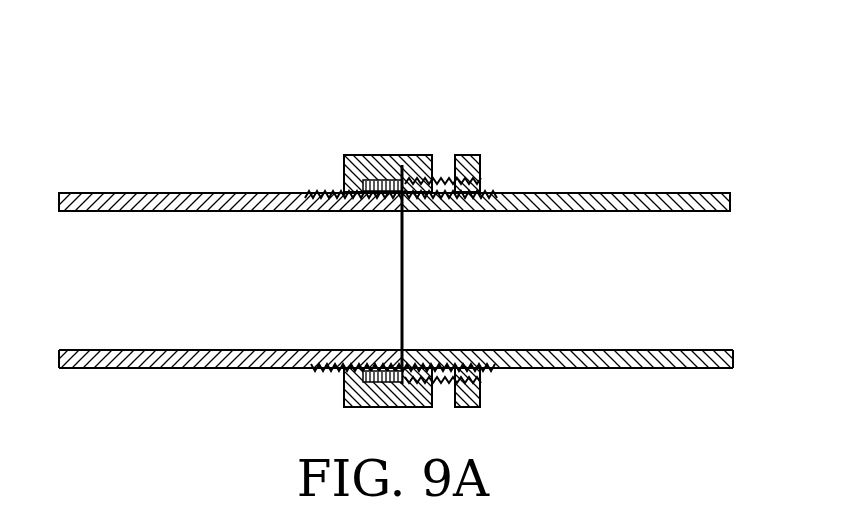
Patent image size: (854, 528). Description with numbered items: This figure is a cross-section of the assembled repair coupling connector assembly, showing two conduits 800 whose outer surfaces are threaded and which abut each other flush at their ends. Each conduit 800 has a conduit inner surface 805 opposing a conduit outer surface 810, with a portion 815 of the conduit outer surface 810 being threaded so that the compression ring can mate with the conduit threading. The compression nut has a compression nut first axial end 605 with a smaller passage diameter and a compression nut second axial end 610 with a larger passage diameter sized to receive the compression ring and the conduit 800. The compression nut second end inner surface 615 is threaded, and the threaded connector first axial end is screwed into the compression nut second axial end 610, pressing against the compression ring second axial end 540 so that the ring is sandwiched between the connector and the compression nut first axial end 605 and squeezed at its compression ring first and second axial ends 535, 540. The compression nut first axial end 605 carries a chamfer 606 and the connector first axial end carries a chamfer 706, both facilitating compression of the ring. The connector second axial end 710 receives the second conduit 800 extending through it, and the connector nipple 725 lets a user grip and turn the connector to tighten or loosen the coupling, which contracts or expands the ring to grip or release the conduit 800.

The compression ring first axial end 535 is at (345, 168).
The compression ring second axial end 540 is at (418, 156).
The compression nut second end inner surface 615 is at (388, 157).
The connector nipple 725 is at (463, 156).
The connector second axial end 710 is at (482, 168).
The compression nut first axial end 605 is at (349, 408).
The chamfer 606 is at (350, 374).
The compression nut second axial end 610 is at (408, 408).
The chamfer 706 is at (435, 395).
The conduit 800 is at (120, 370).
The conduit inner surface 805 is at (88, 348).
The conduit outer surface 810 is at (85, 372).
The portion of the conduit outer surface 815 is at (318, 366).